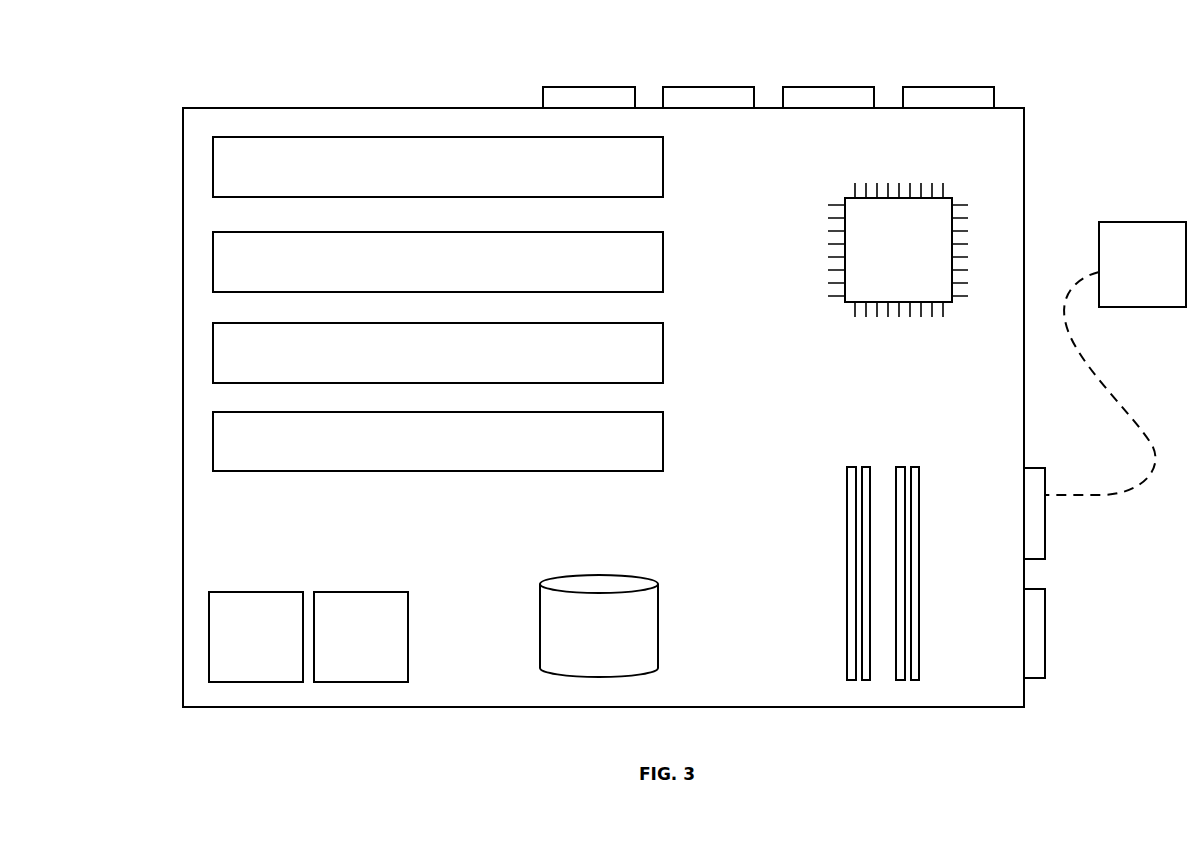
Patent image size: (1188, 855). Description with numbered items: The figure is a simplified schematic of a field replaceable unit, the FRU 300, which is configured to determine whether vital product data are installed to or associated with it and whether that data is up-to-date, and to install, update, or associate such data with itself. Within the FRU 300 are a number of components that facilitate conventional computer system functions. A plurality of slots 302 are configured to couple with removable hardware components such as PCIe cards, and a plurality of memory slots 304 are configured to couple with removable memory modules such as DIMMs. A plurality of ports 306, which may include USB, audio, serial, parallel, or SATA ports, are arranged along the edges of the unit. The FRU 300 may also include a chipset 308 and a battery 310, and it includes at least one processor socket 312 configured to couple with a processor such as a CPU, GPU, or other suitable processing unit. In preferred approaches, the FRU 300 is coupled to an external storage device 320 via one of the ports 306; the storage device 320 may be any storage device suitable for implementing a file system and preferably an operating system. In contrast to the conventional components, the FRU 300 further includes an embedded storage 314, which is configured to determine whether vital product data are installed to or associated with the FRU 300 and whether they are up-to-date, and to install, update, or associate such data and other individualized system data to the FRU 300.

The field replaceable unit (FRU) 300 is at (172, 106).
The slots 302 is at (438, 304).
The memory slots 304 is at (853, 458).
The ports 306 is at (1056, 622).
The chipset 308 is at (256, 637).
The battery 310 is at (361, 637).
The processor socket 312 is at (898, 250).
The embedded storage 314 is at (599, 626).
The storage device 320 is at (1115, 358).